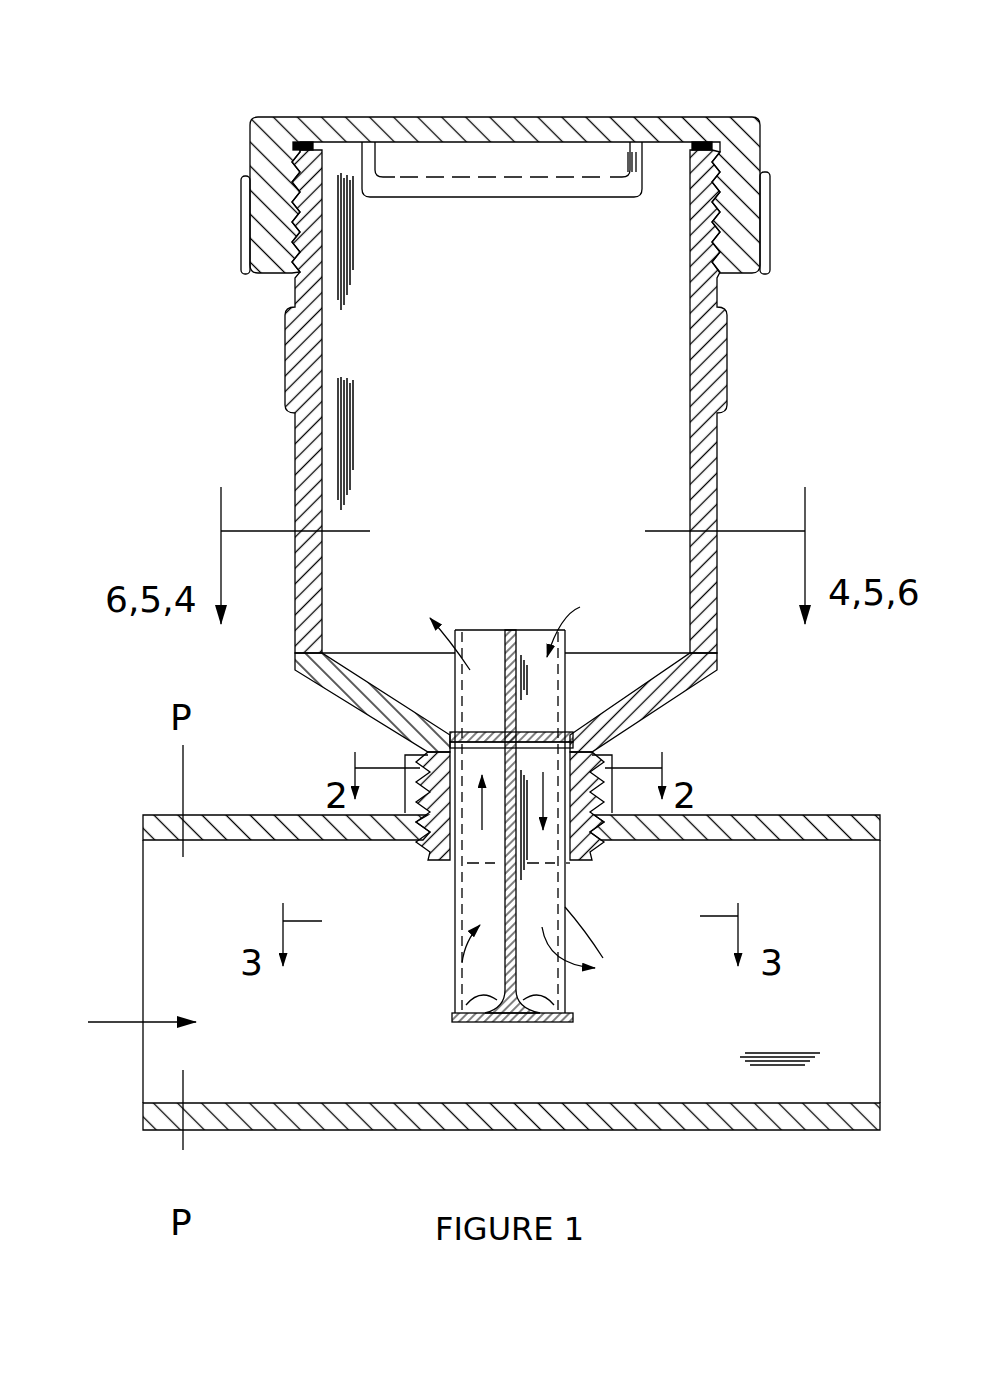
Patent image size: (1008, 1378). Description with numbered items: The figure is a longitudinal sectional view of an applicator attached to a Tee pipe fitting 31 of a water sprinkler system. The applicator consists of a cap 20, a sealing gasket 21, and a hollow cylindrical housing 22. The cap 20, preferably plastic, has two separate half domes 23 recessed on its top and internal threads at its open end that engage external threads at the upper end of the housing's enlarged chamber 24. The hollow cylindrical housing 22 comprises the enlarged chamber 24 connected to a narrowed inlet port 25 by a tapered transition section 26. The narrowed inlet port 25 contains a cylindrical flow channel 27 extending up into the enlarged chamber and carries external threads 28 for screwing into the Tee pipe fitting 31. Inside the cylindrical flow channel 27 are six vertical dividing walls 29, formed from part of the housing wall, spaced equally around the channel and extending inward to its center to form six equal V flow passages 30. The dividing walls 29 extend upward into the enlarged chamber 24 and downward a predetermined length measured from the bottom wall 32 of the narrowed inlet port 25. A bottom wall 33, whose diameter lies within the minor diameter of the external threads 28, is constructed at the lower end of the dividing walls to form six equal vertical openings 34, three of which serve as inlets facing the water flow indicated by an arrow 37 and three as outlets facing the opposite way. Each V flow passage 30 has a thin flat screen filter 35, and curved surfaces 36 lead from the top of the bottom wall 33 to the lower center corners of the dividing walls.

The cap 20 is at (765, 120).
The sealing gasket 21 is at (700, 140).
The hollow cylindrical housing 22 is at (742, 365).
The half domes 23 is at (482, 150).
The enlarged chamber 24 is at (397, 370).
The narrowed inlet port 25 is at (442, 852).
The tapered transition section 26 is at (700, 677).
The cylindrical flow channel 27 is at (427, 752).
The external threads 28 is at (587, 860).
The vertical dividing walls 29 is at (450, 897).
The V flow passages 30 is at (608, 752).
The Tee pipe fitting 31 is at (788, 810).
The bottom wall of the narrowed inlet port 32 is at (582, 865).
The bottom wall 33 is at (522, 1022).
The vertical openings 34 is at (470, 920).
The screen filter 35 is at (482, 730).
The curved surfaces 36 is at (477, 1003).
The arrow 37 is at (92, 1017).